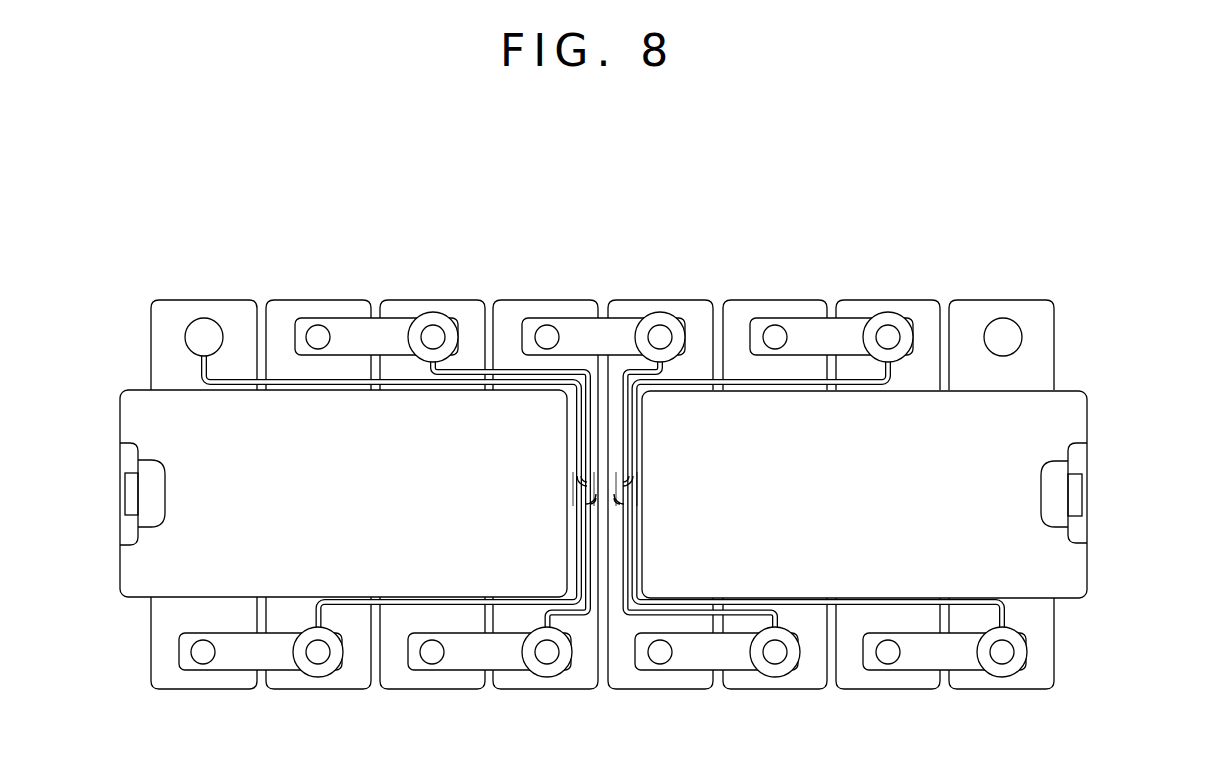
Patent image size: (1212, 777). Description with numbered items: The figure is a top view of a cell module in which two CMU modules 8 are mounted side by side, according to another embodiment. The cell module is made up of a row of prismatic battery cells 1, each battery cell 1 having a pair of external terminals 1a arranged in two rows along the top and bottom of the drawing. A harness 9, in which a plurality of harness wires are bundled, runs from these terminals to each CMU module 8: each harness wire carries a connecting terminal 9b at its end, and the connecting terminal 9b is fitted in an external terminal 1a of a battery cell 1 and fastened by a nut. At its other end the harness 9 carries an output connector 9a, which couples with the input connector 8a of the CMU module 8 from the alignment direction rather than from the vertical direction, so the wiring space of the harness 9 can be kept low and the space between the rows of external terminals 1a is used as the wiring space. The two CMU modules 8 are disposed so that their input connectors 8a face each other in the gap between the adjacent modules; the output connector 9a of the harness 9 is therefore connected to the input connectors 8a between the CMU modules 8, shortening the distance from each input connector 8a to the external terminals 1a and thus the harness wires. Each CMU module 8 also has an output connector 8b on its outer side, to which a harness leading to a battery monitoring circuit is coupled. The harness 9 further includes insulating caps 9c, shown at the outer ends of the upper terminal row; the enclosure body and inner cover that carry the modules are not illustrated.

The battery cell 1 is at (290, 298).
The external terminal 1a is at (606, 487).
The CMU module 8 is at (108, 563).
The input connector 8a is at (605, 489).
The output connector 8b is at (122, 495).
The harness 9 is at (577, 541).
The output connector 9a is at (570, 476).
The connecting terminal 9b is at (447, 312).
The insulating cap 9c is at (204, 318).